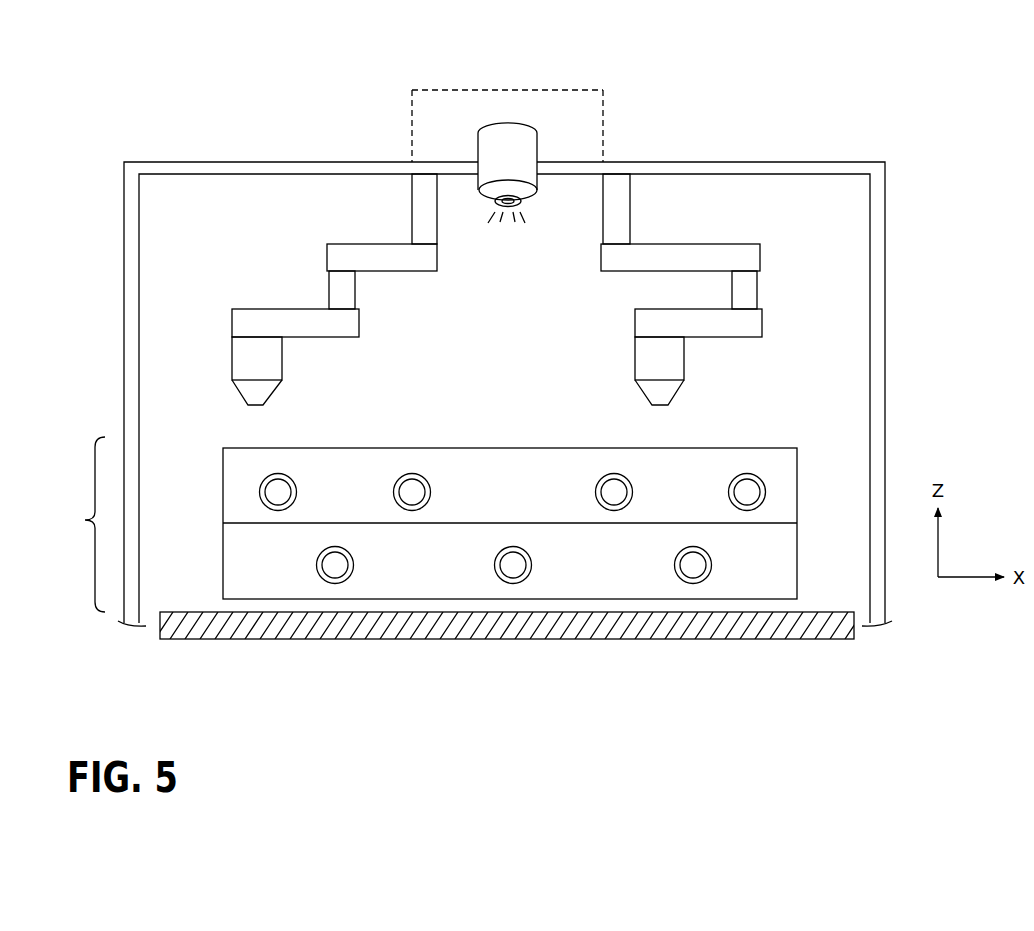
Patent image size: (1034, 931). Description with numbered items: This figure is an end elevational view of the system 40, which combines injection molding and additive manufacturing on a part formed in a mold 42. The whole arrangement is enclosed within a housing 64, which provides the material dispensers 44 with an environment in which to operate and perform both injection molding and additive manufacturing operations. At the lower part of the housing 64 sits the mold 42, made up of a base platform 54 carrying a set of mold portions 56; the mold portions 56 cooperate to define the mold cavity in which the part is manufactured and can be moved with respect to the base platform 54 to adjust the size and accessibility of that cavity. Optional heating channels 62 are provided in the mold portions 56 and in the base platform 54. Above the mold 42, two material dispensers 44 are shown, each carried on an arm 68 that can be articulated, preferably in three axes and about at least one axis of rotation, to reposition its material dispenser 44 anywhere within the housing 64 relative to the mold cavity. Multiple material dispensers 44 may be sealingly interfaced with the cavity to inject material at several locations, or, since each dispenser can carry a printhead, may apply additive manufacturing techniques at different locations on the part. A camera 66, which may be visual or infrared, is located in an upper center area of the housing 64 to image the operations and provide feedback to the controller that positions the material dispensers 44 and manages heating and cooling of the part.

The system 40 is at (732, 90).
The mold 42 is at (84, 536).
The material dispensers 44 is at (229, 373).
The base platform 54 is at (548, 640).
The mold portions 56 is at (760, 448).
The heating channels 62 is at (330, 548).
The housing 64 is at (842, 158).
The camera 66 is at (544, 150).
The arm 68 is at (402, 272).